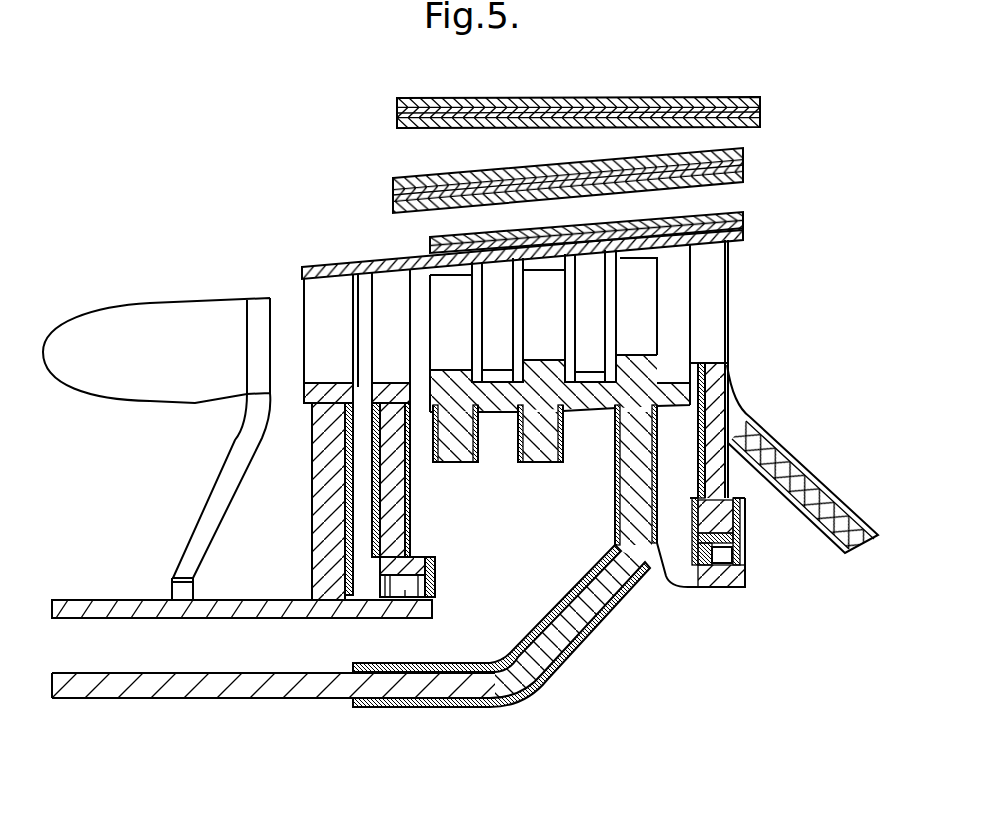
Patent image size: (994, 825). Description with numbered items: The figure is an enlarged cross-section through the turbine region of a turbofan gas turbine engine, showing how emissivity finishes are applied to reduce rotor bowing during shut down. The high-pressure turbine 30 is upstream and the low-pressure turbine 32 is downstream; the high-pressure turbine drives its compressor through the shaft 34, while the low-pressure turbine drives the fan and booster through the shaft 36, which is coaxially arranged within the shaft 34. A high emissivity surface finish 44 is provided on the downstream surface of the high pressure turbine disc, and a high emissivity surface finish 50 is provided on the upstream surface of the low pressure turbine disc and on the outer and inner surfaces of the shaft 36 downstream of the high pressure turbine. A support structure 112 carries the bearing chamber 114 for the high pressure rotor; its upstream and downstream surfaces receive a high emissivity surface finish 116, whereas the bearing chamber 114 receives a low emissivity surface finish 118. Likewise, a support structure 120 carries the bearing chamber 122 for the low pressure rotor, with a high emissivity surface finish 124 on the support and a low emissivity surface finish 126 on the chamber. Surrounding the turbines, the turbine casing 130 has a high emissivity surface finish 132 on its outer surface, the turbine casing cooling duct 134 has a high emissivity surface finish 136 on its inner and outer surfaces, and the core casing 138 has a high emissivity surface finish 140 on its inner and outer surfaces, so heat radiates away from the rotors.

The high-pressure turbine 30 is at (330, 475).
The low-pressure turbine 32 is at (643, 386).
The shaft 34 is at (130, 607).
The shaft 36 is at (333, 687).
The high emissivity surface finish 44 is at (346, 502).
The high emissivity surface finish 50 is at (565, 465).
The support structure 112 is at (392, 477).
The bearing chamber 114 is at (400, 606).
The high emissivity surface finish 116 is at (383, 512).
The low emissivity surface finish 118 is at (436, 582).
The support structure 120 is at (735, 443).
The bearing chamber 122 is at (721, 560).
The high emissivity surface finish 124 is at (738, 487).
The low emissivity surface finish 126 is at (742, 565).
The turbine casing 130 is at (743, 238).
The high emissivity surface finish 132 is at (737, 217).
The turbine casing cooling duct 134 is at (742, 167).
The high emissivity surface finish 136 is at (512, 176).
The core casing 138 is at (503, 112).
The high emissivity surface finish 140 is at (476, 122).